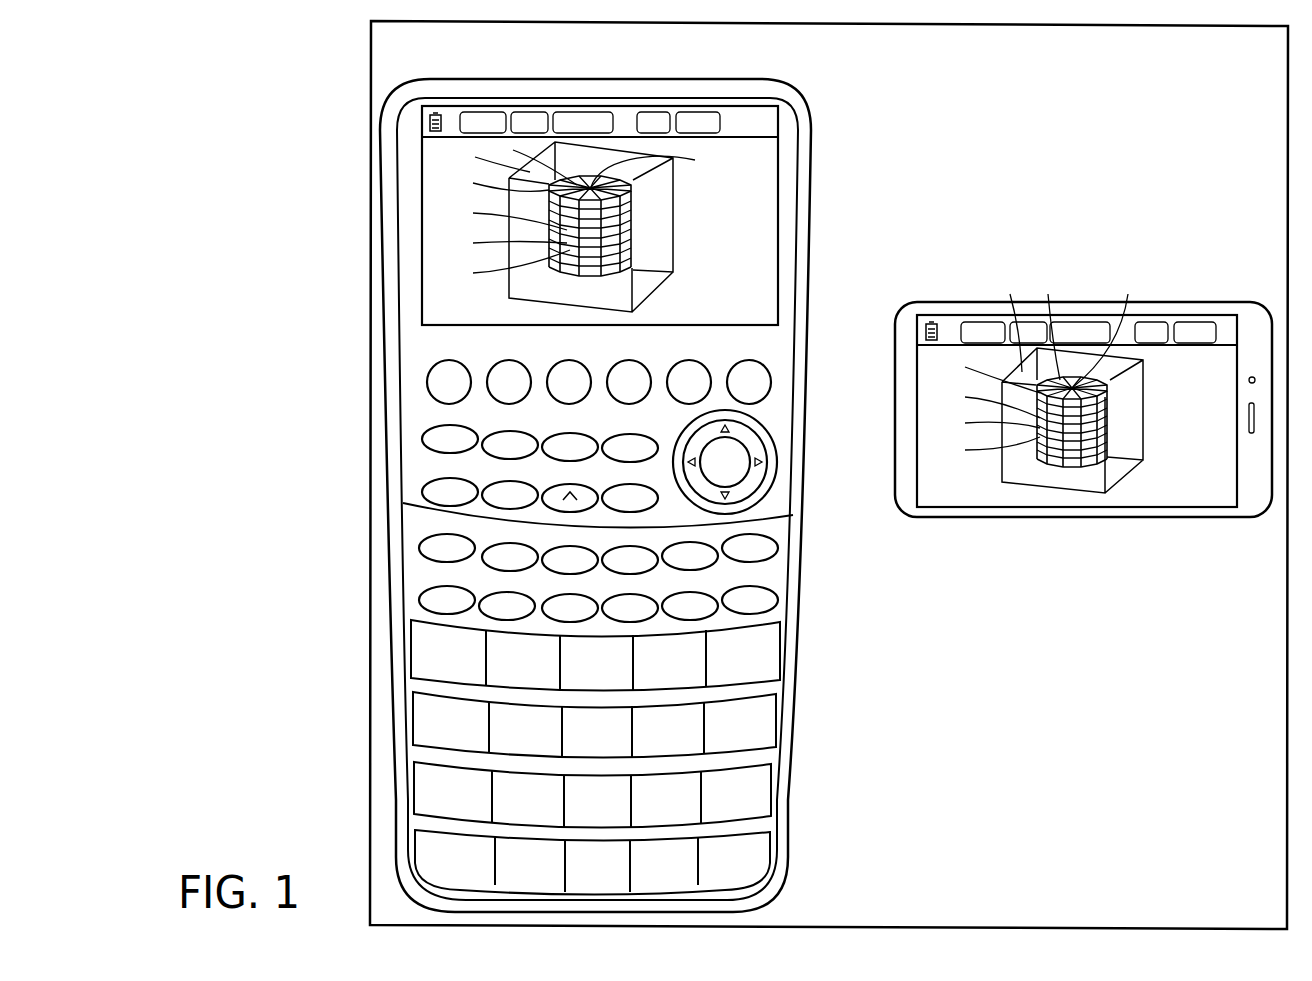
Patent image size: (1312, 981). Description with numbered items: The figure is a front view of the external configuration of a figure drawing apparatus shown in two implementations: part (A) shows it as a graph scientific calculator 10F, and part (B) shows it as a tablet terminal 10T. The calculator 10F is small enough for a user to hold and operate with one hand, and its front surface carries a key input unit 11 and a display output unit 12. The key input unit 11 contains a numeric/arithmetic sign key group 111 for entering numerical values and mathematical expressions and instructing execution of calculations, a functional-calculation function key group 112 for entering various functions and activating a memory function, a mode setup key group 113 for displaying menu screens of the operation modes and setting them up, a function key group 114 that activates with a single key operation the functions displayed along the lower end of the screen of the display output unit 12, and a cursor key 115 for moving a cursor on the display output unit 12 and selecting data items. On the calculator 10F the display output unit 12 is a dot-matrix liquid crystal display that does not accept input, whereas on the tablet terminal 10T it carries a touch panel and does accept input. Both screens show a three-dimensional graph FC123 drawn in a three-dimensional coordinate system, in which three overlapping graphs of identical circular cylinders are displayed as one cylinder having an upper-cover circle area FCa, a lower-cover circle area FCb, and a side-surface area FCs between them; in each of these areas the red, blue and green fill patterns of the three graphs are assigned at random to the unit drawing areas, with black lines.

The graph scientific calculator 10F is at (777, 69).
The tablet terminal 10T is at (1255, 294).
The display output unit 12 is at (757, 157).
The key input unit 11 is at (820, 500).
The numeric/arithmetic sign key group 111 is at (641, 757).
The functional-calculation function key group 112 is at (818, 473).
The mode setup key group 113 is at (818, 420).
The function key group 114 is at (818, 351).
The cursor key 115 is at (746, 447).
The 3D graph FC123 is at (877, 387).
The area of a circle which becomes an upper cover FCa is at (631, 182).
The area of a side surface FCs is at (631, 218).
The area of a circle which becomes a lower cover FCb is at (613, 278).